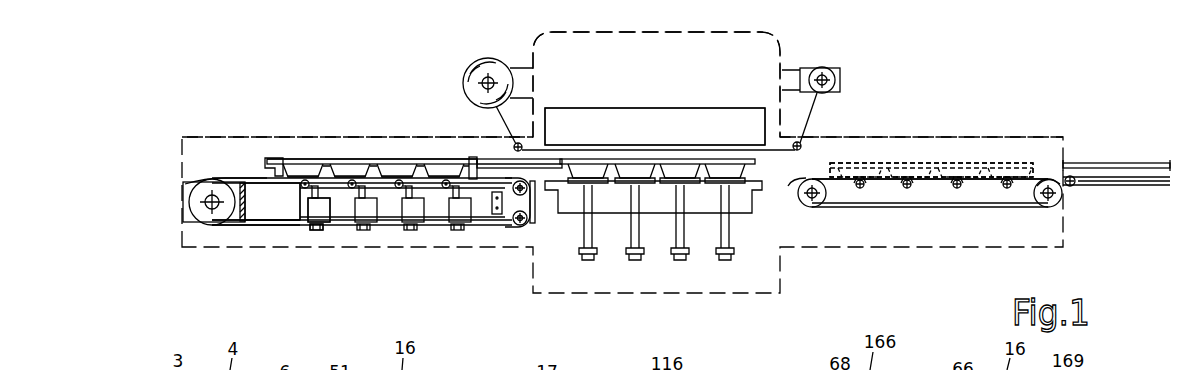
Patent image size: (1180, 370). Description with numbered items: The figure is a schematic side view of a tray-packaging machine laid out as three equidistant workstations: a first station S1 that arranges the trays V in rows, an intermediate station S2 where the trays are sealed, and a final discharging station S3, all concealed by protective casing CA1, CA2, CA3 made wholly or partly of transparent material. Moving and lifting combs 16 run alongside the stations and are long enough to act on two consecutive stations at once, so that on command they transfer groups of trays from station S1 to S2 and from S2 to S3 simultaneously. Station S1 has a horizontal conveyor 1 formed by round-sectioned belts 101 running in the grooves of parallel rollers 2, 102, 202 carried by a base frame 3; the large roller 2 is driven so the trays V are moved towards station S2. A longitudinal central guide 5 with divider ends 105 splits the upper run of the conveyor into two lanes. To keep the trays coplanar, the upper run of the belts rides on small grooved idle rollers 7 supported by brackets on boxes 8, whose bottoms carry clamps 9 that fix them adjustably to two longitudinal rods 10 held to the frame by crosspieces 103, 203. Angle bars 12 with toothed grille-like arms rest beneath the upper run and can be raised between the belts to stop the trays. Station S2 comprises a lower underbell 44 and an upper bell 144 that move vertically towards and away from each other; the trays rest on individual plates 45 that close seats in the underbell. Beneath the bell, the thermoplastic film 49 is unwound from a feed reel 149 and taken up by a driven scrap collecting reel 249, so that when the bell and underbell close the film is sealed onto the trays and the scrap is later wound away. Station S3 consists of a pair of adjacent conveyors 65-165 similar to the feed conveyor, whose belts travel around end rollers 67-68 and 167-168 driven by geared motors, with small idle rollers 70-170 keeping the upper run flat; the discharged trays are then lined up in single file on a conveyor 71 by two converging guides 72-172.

The horizontal conveyor 1 is at (232, 176).
The roller 2 is at (198, 203).
The base frame 3 is at (282, 203).
The longitudinal central guide 5 is at (356, 158).
The small grooved idle rollers 7 is at (305, 189).
The boxes 8 is at (331, 210).
The clamps 9 is at (316, 231).
The rods 10 is at (261, 218).
The angle bars 12 is at (373, 172).
The moving and lifting combs 16 is at (489, 161).
The lower underbell 44 is at (745, 219).
The plates 45 is at (715, 189).
The thermoplastic film 49 is at (592, 157).
The conveyor 71 is at (1131, 177).
The belts 101 is at (225, 180).
The roller 102 is at (535, 205).
The crosspiece 103 is at (243, 201).
The divider ends 105 is at (266, 165).
The upper bell 144 is at (648, 108).
The feed reel 149 is at (469, 82).
The roller 202 is at (519, 225).
The crosspiece 203 is at (495, 214).
The scrap collecting reel 249 is at (830, 74).
The horizontal adjacent conveyors 65-165 is at (823, 170).
The end rollers 67-68 is at (814, 208).
The small idle rollers 70-170 is at (957, 188).
The converging guides 72-172 is at (1086, 164).
The end rollers 167-168 is at (1053, 205).
The protective casing CA1 is at (336, 133).
The protective casing CA2 is at (660, 33).
The protective casing CA3 is at (943, 137).
The first station S1 is at (380, 125).
The intermediate station S2 is at (714, 99).
The final discharging station S3 is at (986, 123).
The trays V is at (304, 170).